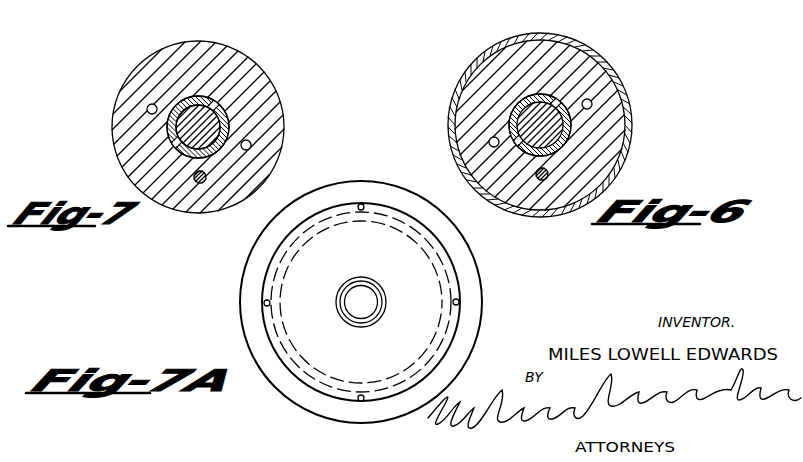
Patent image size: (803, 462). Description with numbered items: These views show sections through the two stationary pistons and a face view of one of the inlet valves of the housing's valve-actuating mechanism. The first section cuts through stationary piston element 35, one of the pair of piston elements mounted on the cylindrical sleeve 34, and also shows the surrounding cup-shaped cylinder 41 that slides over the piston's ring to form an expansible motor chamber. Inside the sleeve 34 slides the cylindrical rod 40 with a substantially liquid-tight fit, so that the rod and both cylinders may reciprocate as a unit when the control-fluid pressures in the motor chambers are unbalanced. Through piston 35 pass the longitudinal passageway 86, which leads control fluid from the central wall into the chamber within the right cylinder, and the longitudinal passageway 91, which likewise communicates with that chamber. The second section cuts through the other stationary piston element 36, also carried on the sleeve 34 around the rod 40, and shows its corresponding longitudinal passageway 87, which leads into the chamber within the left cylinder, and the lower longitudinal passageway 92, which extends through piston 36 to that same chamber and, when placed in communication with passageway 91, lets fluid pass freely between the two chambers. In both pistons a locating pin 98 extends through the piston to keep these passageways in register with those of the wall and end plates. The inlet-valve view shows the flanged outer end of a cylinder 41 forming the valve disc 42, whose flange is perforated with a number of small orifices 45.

In FIG. 7, the stationary piston element 36 is at (233, 55).
In FIG. 7, the cylindrical sleeve 34 is at (226, 117).
In FIG. 7, the cylindrical rod 40 is at (204, 126).
In FIG. 7, the longitudinal passageway 87 is at (147, 107).
In FIG. 7, the longitudinal passageway 92 is at (251, 145).
In FIG. 7, the locating pin 98 is at (203, 182).
In FIG. 6, the locating pin 98 is at (545, 180).
In FIG. 6, the stationary piston element 35 is at (558, 62).
In FIG. 6, the cup-shaped cylinder 41 is at (608, 62).
In FIG. 6, the longitudinal passageway 91 is at (592, 104).
In FIG. 6, the longitudinal passageway 86 is at (489, 142).
In FIG. 7A, the valve disc 42 is at (471, 268).
In FIG. 7A, the small orifices 45 is at (460, 301).